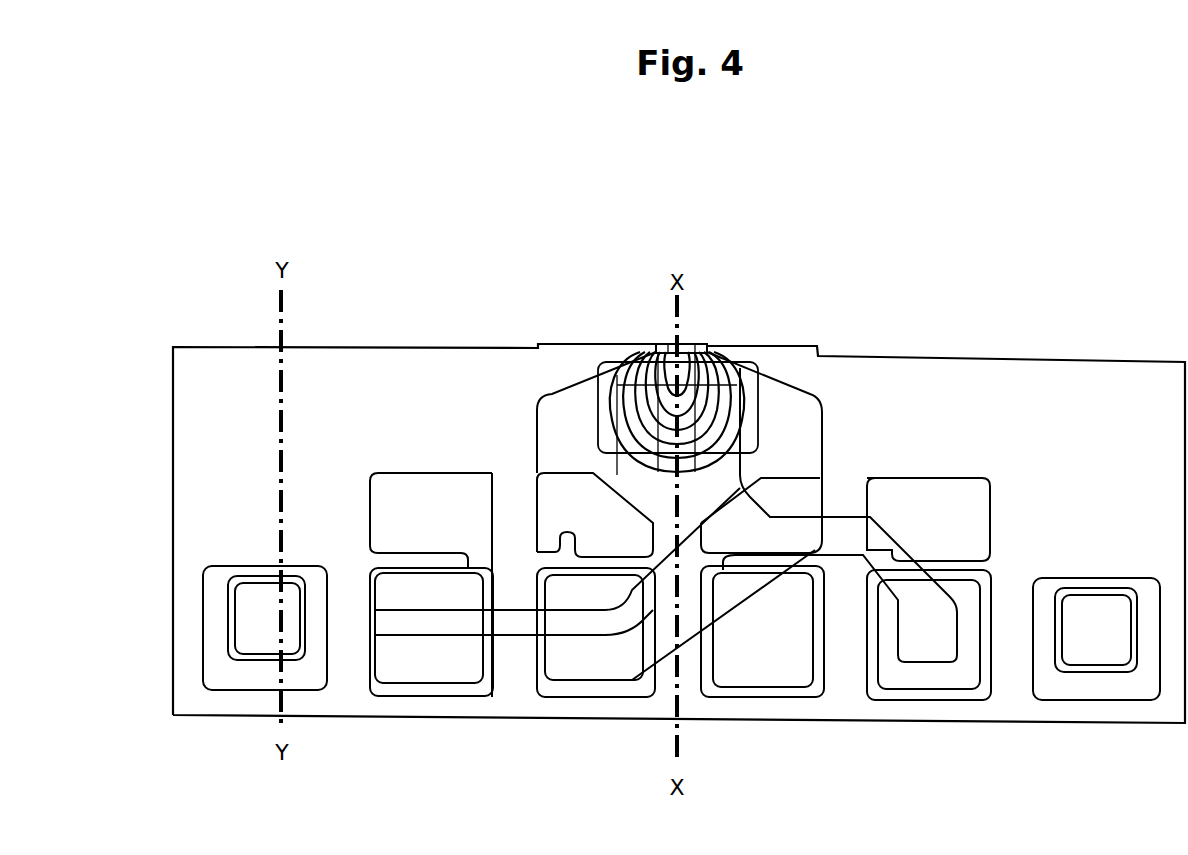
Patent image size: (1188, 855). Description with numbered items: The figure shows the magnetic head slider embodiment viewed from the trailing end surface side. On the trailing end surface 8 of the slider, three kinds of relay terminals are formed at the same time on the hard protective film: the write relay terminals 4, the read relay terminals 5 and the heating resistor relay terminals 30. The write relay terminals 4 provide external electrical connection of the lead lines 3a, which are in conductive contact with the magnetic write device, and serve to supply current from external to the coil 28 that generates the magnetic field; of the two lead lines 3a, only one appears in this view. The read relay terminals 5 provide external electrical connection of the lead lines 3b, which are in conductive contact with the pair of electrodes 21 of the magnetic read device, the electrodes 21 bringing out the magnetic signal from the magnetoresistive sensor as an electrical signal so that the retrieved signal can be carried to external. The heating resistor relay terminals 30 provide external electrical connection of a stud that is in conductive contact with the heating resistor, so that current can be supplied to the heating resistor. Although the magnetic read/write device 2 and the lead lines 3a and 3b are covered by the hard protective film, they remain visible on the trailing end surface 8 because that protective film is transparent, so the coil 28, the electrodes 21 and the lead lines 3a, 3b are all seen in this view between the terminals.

The magnetic read/write device 2 is at (658, 346).
The lead lines 3a is at (838, 528).
The lead lines 3b is at (515, 657).
The write relay terminals 4 is at (800, 690).
The read relay terminals 5 is at (552, 685).
The trailing end surface 8 is at (1070, 389).
The electrodes 21 is at (556, 392).
The coil 28 is at (708, 350).
The heating resistor relay terminals 30 is at (312, 672).